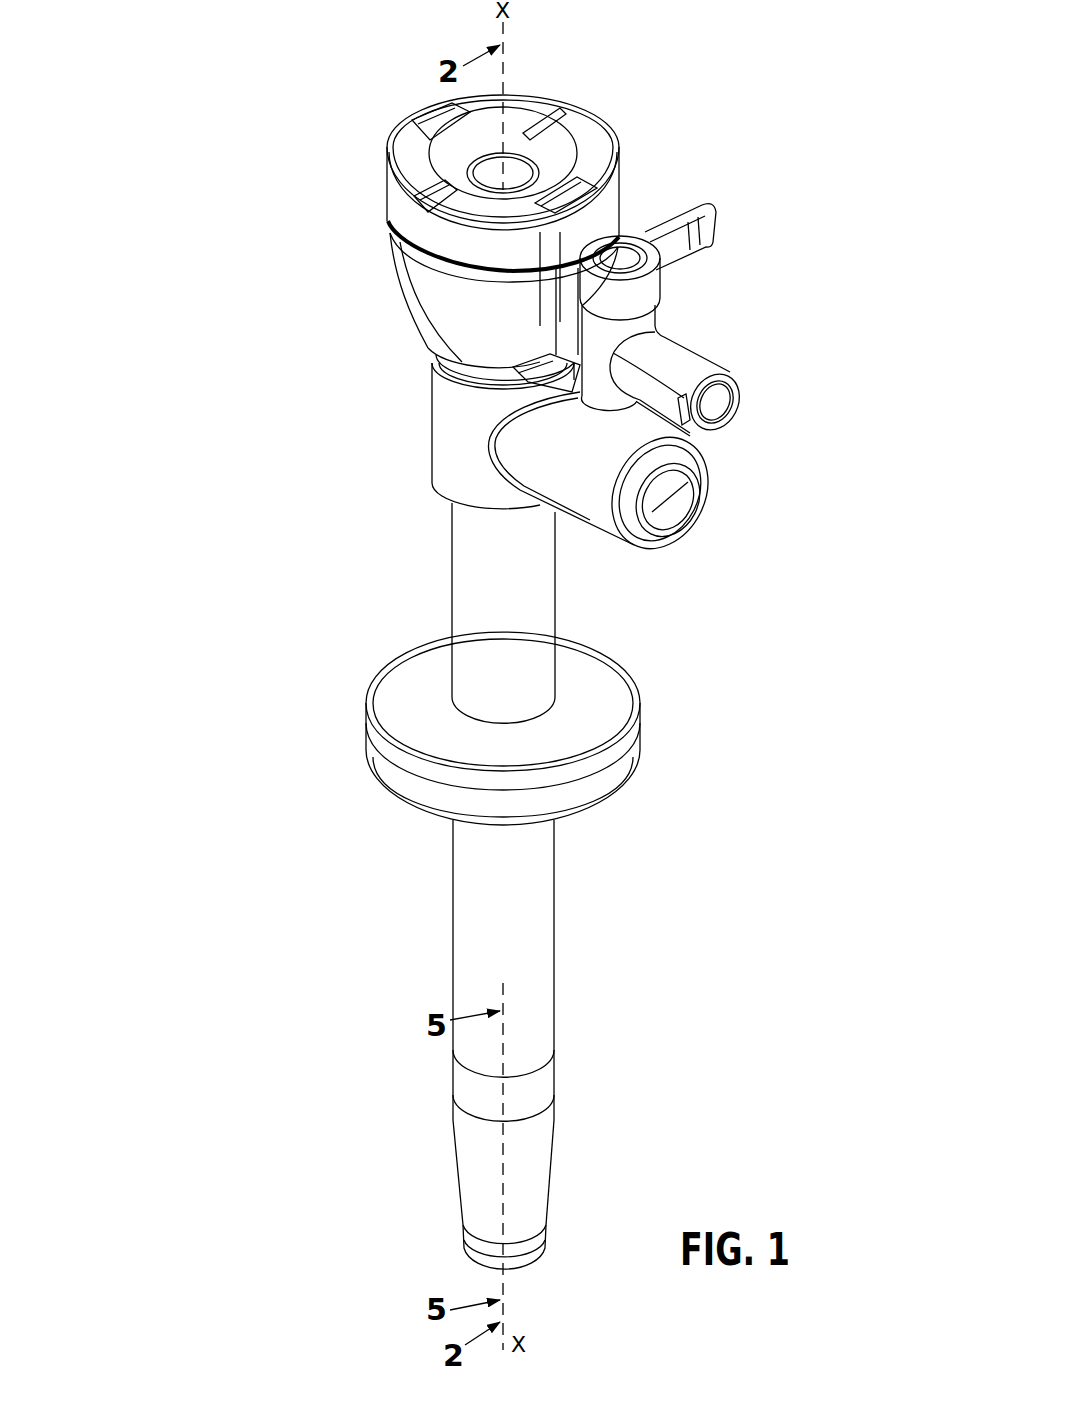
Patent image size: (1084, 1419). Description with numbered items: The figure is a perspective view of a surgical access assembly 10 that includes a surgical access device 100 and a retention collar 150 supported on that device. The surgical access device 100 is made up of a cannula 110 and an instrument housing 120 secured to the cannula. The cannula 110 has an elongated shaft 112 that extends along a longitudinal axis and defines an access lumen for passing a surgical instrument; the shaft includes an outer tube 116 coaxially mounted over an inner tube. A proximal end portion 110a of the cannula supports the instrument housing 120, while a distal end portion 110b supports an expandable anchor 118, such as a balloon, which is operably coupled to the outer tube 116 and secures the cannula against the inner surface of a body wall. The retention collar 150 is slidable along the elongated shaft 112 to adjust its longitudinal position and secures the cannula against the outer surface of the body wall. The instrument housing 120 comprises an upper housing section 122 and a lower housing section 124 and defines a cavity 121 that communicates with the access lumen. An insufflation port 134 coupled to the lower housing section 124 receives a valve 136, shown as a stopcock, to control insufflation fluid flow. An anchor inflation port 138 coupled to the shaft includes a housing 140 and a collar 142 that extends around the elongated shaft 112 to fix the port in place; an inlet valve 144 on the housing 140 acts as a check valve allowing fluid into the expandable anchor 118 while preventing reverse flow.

The surgical access assembly 10 is at (500, 634).
The surgical access device 100 is at (500, 326).
The cannula 110 is at (455, 799).
The proximal end portion 110a is at (445, 359).
The distal end portion 110b is at (447, 1217).
The elongated shaft 112 is at (558, 587).
The outer tube 116 is at (538, 972).
The expandable anchor 118 is at (535, 1148).
The instrument housing 120 is at (458, 162).
The cavity 121 is at (516, 172).
The upper housing section 122 is at (386, 194).
The lower housing section 124 is at (458, 305).
The insufflation port 134 is at (668, 364).
The valve 136 is at (668, 225).
The anchor inflation port 138 is at (689, 481).
The housing 140 is at (606, 522).
The collar 142 is at (456, 436).
The inlet valve 144 is at (684, 512).
The retention collar 150 is at (456, 710).